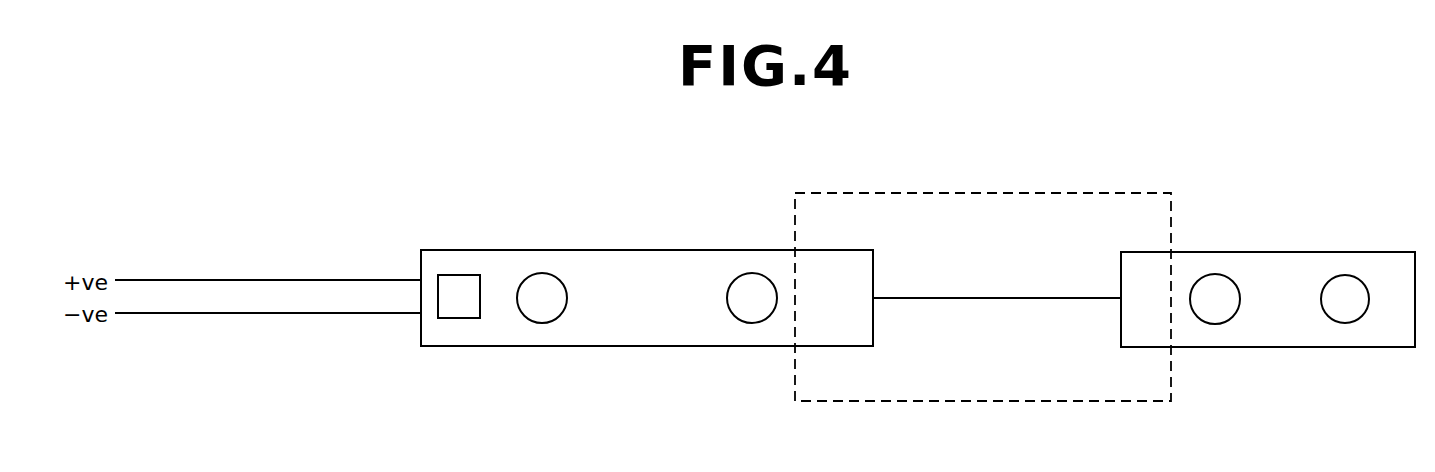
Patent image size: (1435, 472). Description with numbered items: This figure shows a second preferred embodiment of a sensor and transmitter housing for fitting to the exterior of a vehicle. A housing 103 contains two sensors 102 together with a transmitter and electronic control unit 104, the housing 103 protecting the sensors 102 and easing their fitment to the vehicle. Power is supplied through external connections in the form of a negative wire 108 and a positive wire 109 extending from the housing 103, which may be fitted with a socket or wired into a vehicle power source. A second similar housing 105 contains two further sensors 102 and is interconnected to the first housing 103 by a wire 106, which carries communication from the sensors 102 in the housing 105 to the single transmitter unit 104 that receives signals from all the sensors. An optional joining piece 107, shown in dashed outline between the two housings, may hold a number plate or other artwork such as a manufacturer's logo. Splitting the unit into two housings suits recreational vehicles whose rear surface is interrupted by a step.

The sensor 102 is at (543, 288).
The housing 103 is at (617, 328).
The transmitter and electronic control unit 104 is at (458, 288).
The second housing 105 is at (1281, 333).
The wire 106 is at (945, 297).
The joining piece 107 is at (1063, 192).
The negative wire 108 is at (253, 315).
The positive wire 109 is at (253, 280).